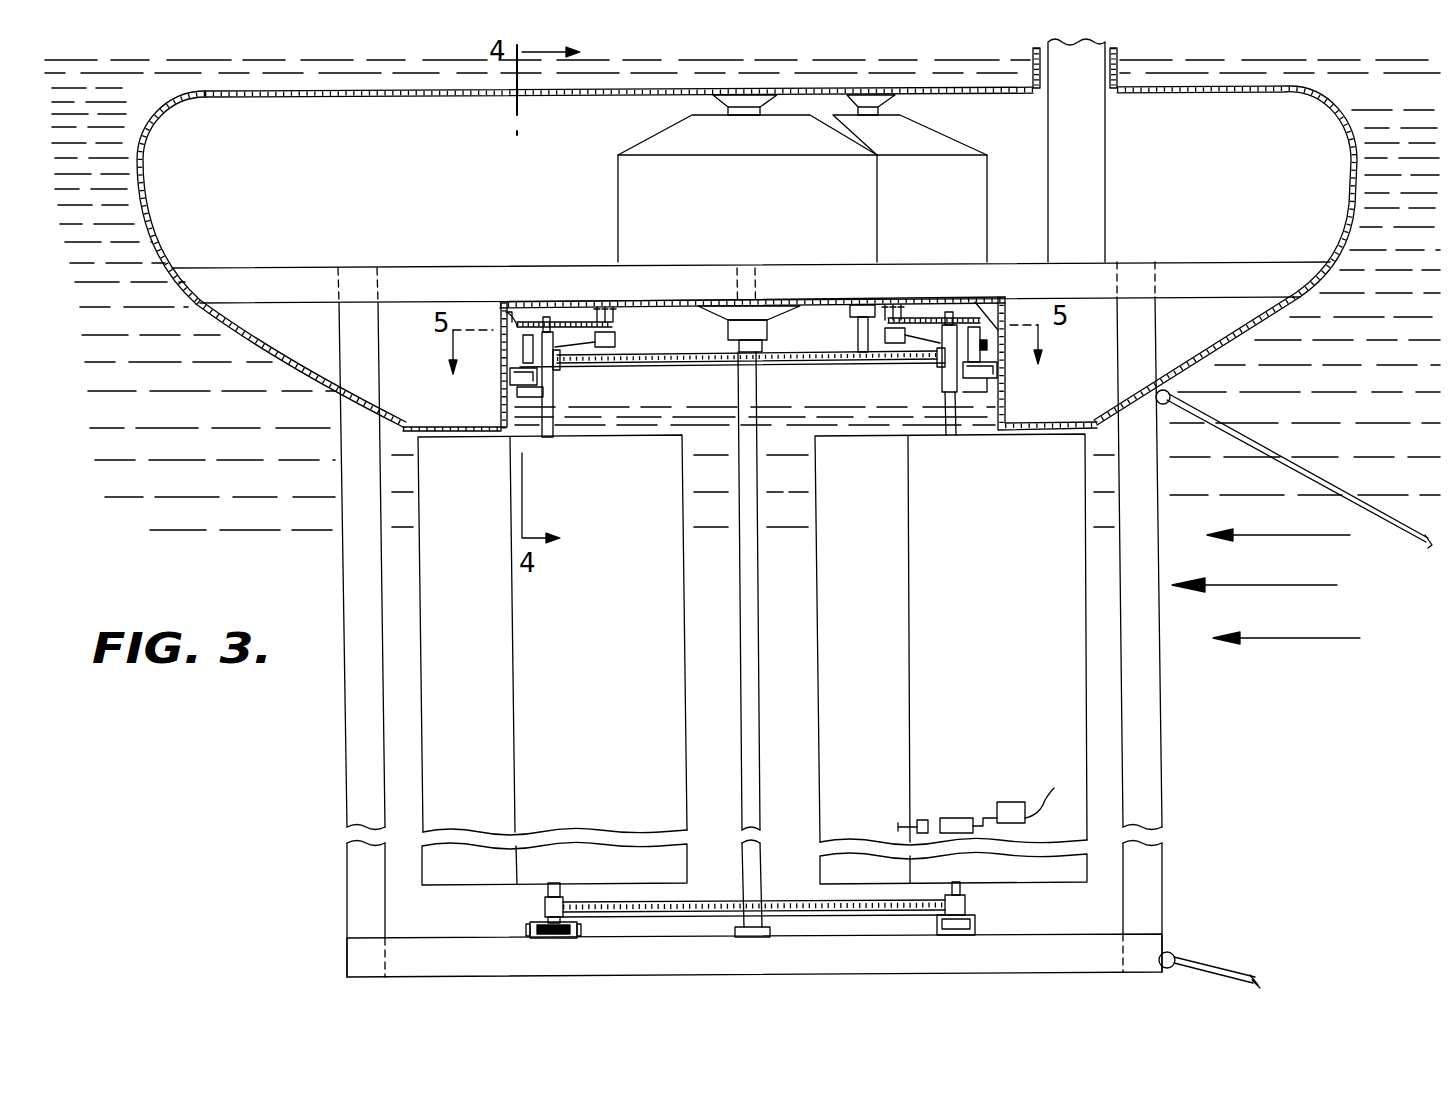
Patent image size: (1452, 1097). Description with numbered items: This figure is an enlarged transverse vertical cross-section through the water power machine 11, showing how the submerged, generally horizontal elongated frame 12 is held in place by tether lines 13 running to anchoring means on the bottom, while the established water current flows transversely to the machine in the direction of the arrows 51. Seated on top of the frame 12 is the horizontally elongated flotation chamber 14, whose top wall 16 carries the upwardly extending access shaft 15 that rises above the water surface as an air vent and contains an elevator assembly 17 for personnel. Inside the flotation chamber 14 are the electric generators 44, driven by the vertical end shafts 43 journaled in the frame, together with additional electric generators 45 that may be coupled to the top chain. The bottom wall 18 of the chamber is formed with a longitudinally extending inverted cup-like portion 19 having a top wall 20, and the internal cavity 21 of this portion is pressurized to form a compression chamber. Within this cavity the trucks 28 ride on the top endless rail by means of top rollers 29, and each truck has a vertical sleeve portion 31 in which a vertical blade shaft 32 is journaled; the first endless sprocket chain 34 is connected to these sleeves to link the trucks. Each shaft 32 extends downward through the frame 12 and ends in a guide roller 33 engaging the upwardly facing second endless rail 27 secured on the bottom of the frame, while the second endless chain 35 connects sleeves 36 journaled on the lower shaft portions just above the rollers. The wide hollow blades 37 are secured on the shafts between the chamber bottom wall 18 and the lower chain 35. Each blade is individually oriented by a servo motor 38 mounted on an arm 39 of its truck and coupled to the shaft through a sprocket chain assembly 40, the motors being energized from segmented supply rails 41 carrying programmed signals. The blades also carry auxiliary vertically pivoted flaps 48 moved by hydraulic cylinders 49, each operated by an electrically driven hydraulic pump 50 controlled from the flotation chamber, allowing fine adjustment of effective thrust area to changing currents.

The water power machine 11 is at (1356, 123).
The frame 12 is at (347, 708).
The tether lines 13 is at (1272, 459).
The flotation chamber 14 is at (238, 360).
The access shaft 15 is at (1120, 55).
The top wall 16 is at (566, 96).
The elevator assembly 17 is at (1101, 212).
The bottom wall 18 is at (430, 421).
The inverted cup-like portion 19 is at (1006, 384).
The top wall 20 is at (595, 306).
The internal cavity 21 is at (836, 345).
The second endless rail 27 is at (530, 928).
The trucks 28 is at (538, 397).
The top rollers 29 is at (510, 305).
The vertical sleeve portion 31 is at (944, 382).
The vertical blade shaft 32 is at (557, 406).
The guide roller 33 is at (549, 940).
The first endless sprocket chain 34 is at (663, 357).
The second endless chain 35 is at (710, 888).
The sleeves 36 is at (561, 900).
The hollow blades 37 is at (670, 643).
The servo motors 38 is at (616, 340).
The arm 39 is at (565, 338).
The sprocket chain assemblies 40 is at (567, 326).
The segmented supply rails 41 is at (615, 308).
The vertical end shafts 43 is at (754, 754).
The electric generators 44 is at (619, 190).
The additional electric generators 45 is at (974, 211).
The auxiliary vertically pivoted flaps 48 is at (827, 613).
The hydraulic cylinders 49 is at (955, 818).
The electrically driven hydraulic pump 50 is at (1010, 802).
The arrows 51 is at (1320, 586).